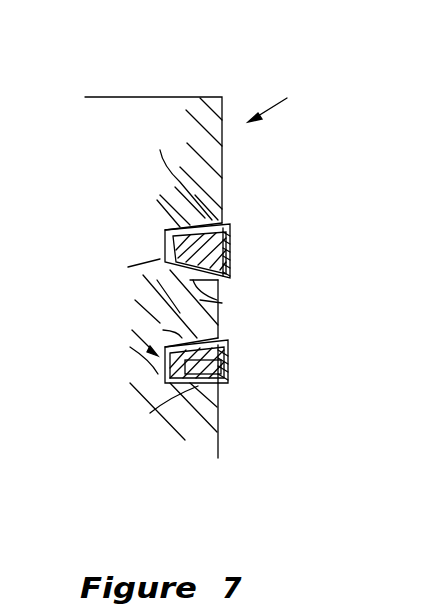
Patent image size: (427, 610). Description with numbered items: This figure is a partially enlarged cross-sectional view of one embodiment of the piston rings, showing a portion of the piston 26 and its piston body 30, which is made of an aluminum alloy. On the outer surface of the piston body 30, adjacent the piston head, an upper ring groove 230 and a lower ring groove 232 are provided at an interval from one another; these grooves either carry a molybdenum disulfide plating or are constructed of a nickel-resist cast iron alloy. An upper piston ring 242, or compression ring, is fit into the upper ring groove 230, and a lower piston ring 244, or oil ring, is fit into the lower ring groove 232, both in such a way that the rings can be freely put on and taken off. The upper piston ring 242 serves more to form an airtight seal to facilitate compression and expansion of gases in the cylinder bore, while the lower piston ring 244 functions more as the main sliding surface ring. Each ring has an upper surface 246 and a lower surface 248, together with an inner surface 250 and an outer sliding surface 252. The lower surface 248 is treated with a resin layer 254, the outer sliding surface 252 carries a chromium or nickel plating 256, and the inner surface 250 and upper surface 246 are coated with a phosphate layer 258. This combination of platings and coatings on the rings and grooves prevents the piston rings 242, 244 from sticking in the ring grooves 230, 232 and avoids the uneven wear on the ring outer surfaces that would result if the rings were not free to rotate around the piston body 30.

The piston body 30 is at (207, 110).
The piston 26 is at (288, 102).
The upper surface 246 is at (160, 150).
The phosphate layer 258 is at (160, 195).
The upper piston ring 242 is at (150, 225).
The upper ring groove 230 is at (222, 223).
The chromium or nickel plating 256 is at (232, 240).
The resin layer 254 is at (222, 287).
The lower surface 248 is at (224, 302).
The lower ring groove 232 is at (222, 338).
The outer sliding surface 252 is at (228, 382).
The lower piston ring 244 is at (147, 381).
The inner surface 250 is at (150, 413).